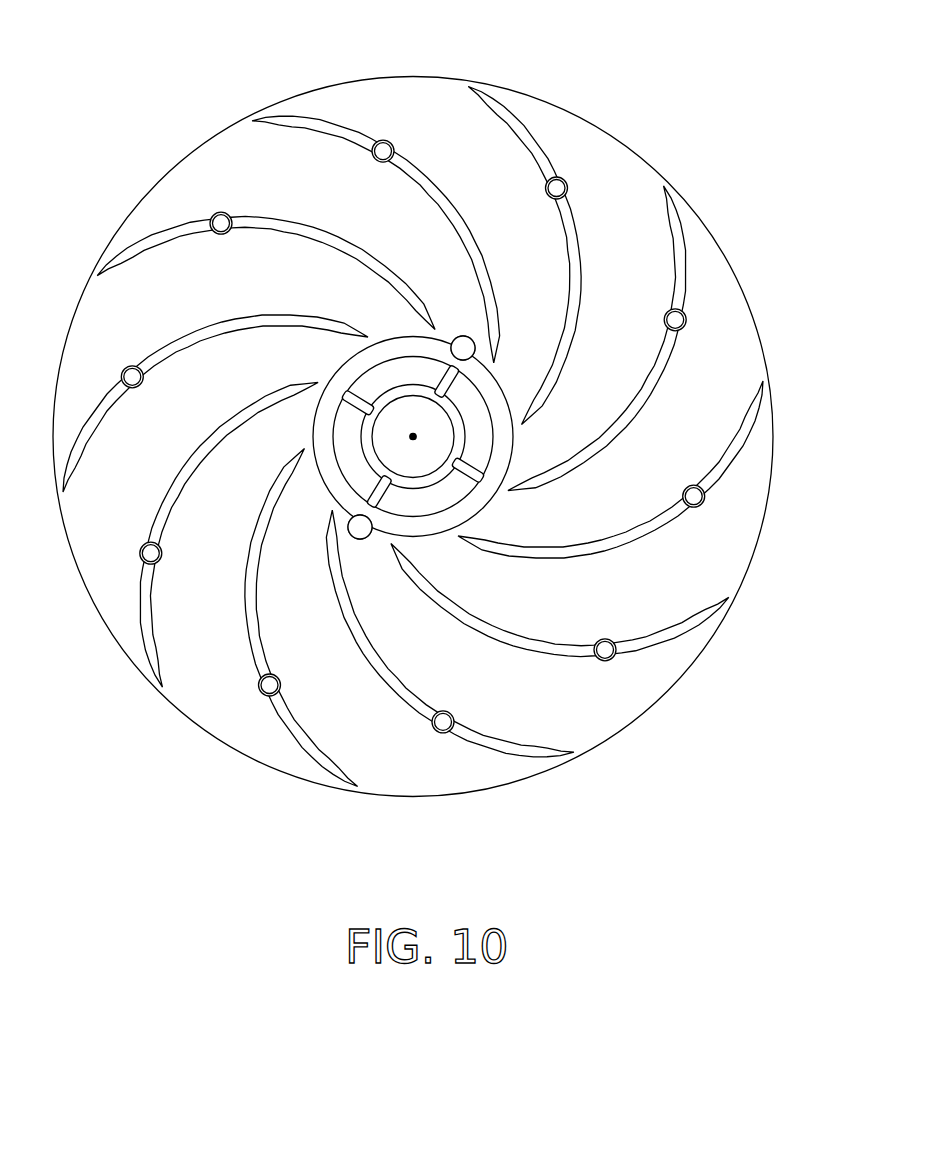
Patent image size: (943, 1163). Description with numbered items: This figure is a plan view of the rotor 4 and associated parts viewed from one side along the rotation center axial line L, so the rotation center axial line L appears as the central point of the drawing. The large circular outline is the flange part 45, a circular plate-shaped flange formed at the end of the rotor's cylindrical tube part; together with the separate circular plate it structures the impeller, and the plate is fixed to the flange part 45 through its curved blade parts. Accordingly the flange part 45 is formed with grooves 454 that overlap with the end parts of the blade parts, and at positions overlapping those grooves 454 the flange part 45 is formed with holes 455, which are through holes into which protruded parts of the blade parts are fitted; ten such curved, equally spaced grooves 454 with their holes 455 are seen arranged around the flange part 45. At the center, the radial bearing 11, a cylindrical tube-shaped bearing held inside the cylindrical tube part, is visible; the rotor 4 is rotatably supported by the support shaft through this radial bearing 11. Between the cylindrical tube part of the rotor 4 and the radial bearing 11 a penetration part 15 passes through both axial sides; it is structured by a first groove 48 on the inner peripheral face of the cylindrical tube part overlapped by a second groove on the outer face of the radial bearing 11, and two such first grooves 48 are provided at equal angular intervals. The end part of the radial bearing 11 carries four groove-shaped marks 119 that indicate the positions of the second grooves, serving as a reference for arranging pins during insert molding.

The rotor 4 is at (634, 146).
The flange part 45 is at (432, 107).
The hole 455 is at (673, 347).
The groove 454 is at (686, 338).
The radial bearing 11 is at (452, 417).
The mark 119 is at (447, 380).
The first groove 48 is at (462, 346).
The penetration part 15 is at (362, 530).
The rotation center axial line L is at (413, 436).